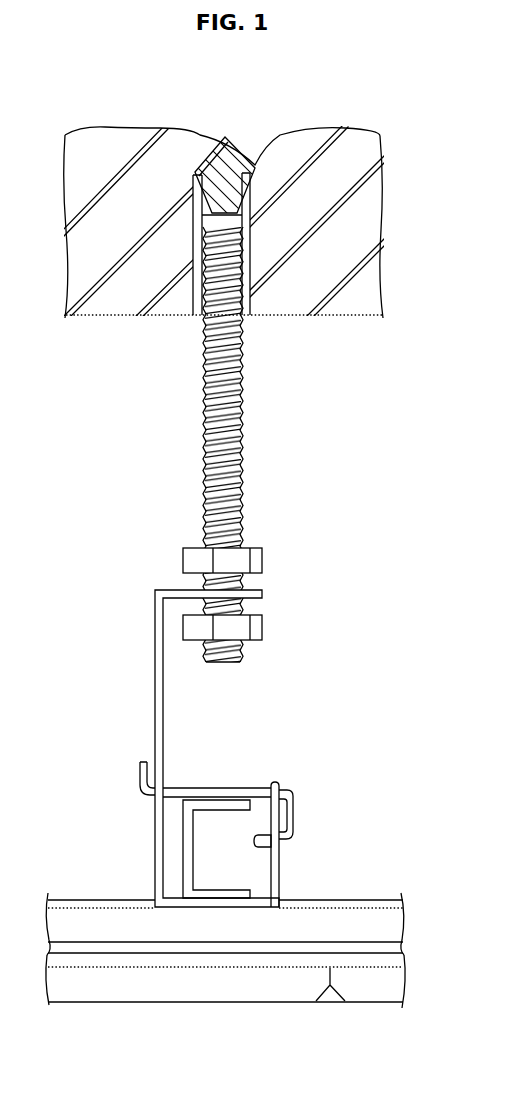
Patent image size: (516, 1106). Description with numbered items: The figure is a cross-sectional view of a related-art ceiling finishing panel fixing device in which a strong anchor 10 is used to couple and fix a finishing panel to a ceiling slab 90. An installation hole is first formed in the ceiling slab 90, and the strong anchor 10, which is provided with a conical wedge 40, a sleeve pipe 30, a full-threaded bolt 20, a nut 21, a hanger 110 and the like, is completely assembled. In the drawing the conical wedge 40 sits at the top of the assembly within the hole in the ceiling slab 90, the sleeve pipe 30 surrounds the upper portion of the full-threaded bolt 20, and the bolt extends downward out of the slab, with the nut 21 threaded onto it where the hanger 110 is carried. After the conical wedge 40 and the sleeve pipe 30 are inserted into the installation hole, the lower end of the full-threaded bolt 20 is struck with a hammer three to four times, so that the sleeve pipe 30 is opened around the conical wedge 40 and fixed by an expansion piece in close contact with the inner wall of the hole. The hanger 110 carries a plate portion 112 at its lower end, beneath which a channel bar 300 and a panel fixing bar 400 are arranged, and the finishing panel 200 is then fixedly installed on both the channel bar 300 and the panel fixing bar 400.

The strong anchor 10 is at (300, 439).
The full-threaded bolt 20 is at (243, 512).
The nut 21 is at (258, 627).
The sleeve pipe 30 is at (193, 222).
The conical wedge 40 is at (258, 137).
The ceiling slab 90 is at (352, 137).
The hanger 110 is at (158, 693).
The support plate 112 is at (255, 788).
The finishing panel 200 is at (150, 992).
The channel bar 300 is at (190, 863).
The panel fixing bar 400 is at (338, 917).